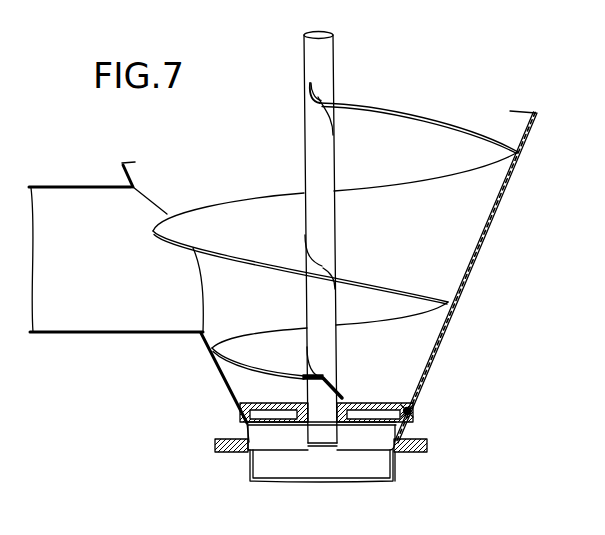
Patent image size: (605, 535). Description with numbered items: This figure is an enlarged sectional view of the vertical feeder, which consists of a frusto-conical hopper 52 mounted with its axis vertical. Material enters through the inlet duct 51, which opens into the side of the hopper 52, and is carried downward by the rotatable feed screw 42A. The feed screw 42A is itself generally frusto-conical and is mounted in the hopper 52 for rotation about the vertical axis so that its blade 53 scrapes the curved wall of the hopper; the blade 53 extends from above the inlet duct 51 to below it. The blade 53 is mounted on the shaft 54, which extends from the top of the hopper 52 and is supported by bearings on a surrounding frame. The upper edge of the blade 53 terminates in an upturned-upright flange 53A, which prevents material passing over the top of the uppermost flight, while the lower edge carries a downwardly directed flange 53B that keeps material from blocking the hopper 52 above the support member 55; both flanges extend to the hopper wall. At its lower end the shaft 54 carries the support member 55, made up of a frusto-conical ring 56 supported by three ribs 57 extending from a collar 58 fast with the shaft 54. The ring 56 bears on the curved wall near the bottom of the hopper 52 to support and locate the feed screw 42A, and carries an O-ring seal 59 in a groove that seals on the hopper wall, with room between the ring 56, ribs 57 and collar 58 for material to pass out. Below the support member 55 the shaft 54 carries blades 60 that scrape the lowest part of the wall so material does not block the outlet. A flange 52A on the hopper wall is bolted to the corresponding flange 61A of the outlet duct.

The inlet duct 51 is at (66, 198).
The feed screw 42A is at (246, 186).
The frusto-conical hopper 52 is at (490, 238).
The flange 52A is at (423, 441).
The blade 53 is at (272, 200).
The upturned-upright flange 53A is at (313, 95).
The downwardly directed flange 53B is at (333, 378).
The shaft 54 is at (327, 72).
The support member 55 is at (250, 385).
The frusto-conical ring 56 is at (243, 405).
The ribs 57 is at (280, 413).
The collar 58 is at (345, 399).
The O-ring seal 59 is at (413, 408).
The blades 60 is at (347, 447).
The flange 61A is at (424, 452).